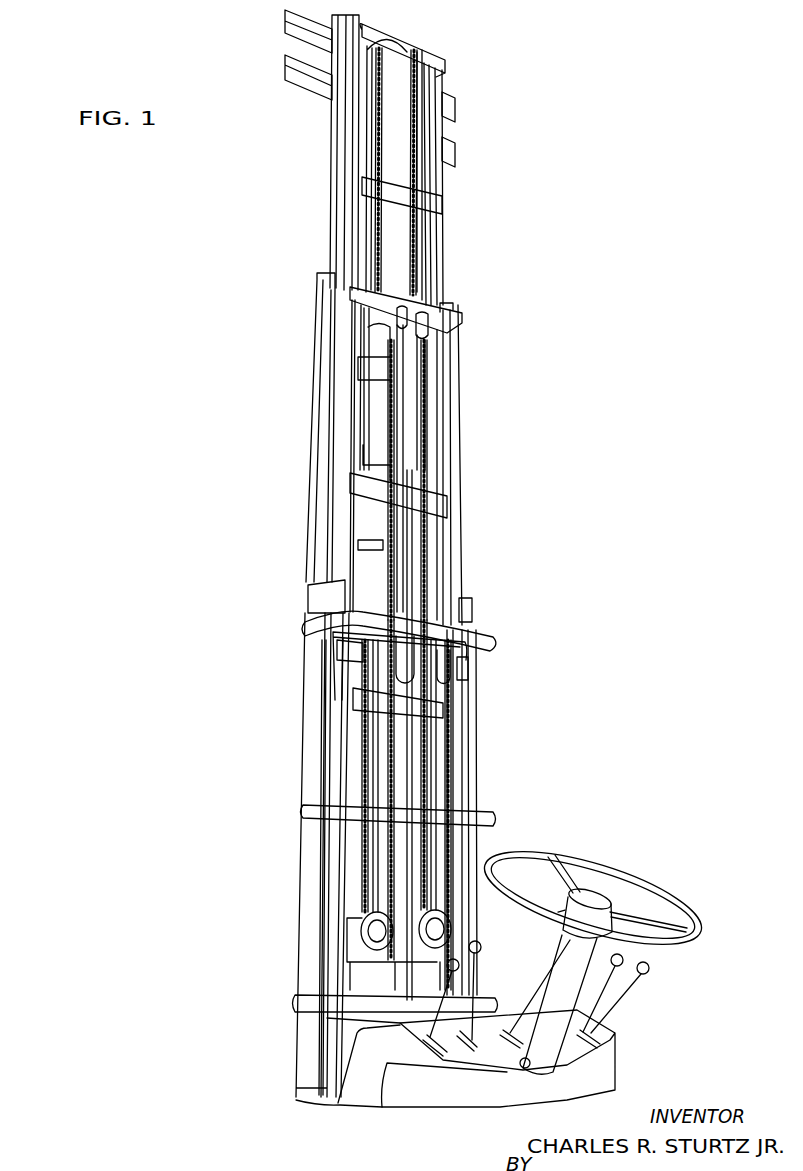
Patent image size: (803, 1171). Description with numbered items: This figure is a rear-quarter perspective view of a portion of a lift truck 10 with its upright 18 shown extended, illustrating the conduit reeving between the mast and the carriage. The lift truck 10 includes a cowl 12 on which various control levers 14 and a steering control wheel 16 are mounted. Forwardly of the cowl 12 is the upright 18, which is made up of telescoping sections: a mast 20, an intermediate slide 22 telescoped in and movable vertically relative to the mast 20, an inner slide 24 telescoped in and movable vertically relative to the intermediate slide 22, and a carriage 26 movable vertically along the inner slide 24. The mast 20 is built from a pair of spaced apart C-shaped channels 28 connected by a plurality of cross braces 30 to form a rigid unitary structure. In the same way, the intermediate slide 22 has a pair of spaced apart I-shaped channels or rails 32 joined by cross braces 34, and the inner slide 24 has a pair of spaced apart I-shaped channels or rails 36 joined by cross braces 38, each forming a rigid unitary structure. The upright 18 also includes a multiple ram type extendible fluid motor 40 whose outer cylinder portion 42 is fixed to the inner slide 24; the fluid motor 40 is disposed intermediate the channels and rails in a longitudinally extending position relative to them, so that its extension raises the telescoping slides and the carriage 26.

The lift truck 10 is at (370, 1120).
The cowl 12 is at (603, 1068).
The control levers 14 is at (482, 948).
The steering control wheel 16 is at (670, 898).
The upright 18 is at (300, 726).
The mast 20 is at (298, 862).
The intermediate slide 22 is at (313, 496).
The inner slide 24 is at (327, 175).
The carriage 26 is at (307, 78).
The C-shaped channels 28 is at (466, 760).
The cross braces 30 is at (488, 641).
The I-shaped channels or rails 32 is at (323, 403).
The cross braces 34 is at (462, 323).
The I-shaped channels or rails 36 is at (334, 223).
The cross braces 38 is at (430, 68).
The multiple ram type extendible fluid motor 40 is at (407, 740).
The outer cylinder portion 42 is at (380, 347).